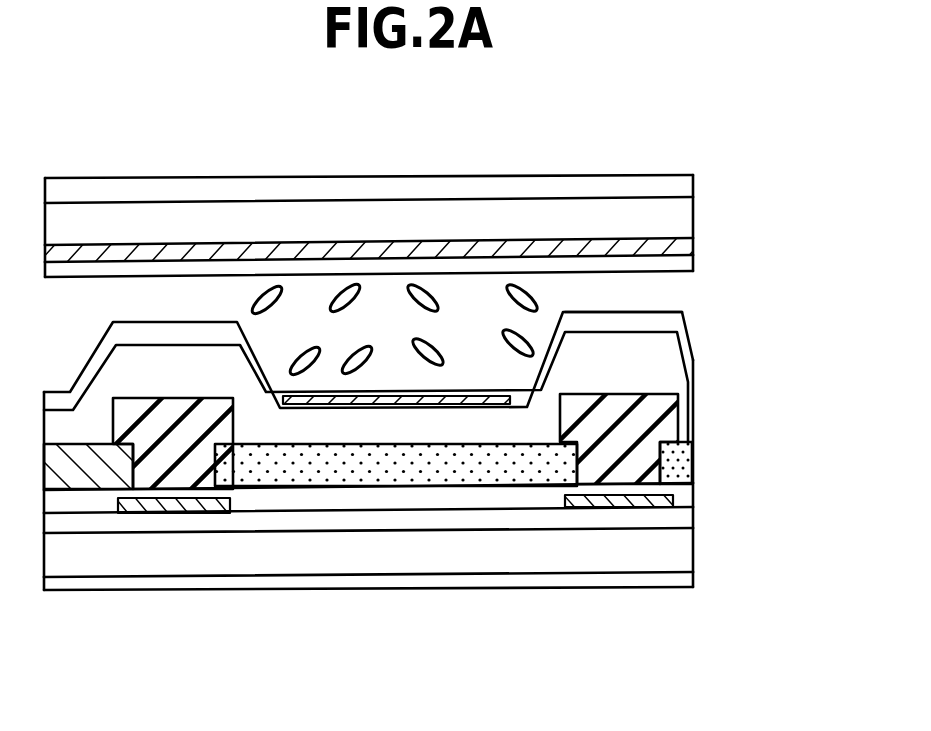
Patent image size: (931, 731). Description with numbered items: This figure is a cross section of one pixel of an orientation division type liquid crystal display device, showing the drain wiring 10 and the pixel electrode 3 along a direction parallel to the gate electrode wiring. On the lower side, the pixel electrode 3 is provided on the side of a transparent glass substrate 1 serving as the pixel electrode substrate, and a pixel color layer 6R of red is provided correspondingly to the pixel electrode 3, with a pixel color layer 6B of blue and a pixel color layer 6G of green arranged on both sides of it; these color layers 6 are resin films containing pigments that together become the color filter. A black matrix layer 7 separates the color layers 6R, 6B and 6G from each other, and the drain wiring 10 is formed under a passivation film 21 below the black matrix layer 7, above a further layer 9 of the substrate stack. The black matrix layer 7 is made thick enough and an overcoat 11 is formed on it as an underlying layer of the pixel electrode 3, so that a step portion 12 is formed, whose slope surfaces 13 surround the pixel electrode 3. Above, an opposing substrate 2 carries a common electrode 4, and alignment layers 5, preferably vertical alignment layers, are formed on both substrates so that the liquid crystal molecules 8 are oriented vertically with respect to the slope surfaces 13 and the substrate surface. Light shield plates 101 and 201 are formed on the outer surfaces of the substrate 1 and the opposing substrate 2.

The transparent glass substrate 1 is at (683, 553).
The opposing substrate 2 is at (683, 215).
The pixel electrode 3 is at (490, 405).
The common electrode 4 is at (683, 246).
The alignment layer 5 is at (670, 320).
The color layer 6 is at (683, 271).
The pixel color layer (blue) 6B is at (82, 476).
The pixel color layer (red) 6R is at (387, 470).
The pixel color layer (green) 6G is at (685, 456).
The black matrix layer 7 is at (122, 428).
The liquid crystal molecules 8 is at (282, 290).
The insulating layer 9 is at (683, 519).
The drain wiring 10 is at (172, 508).
The overcoat 11 is at (122, 360).
The step portion 12 is at (112, 389).
The slope surface 13 is at (540, 343).
The passivation film 21 is at (683, 495).
The light shield plate 101 is at (683, 578).
The light shield plate 201 is at (683, 182).